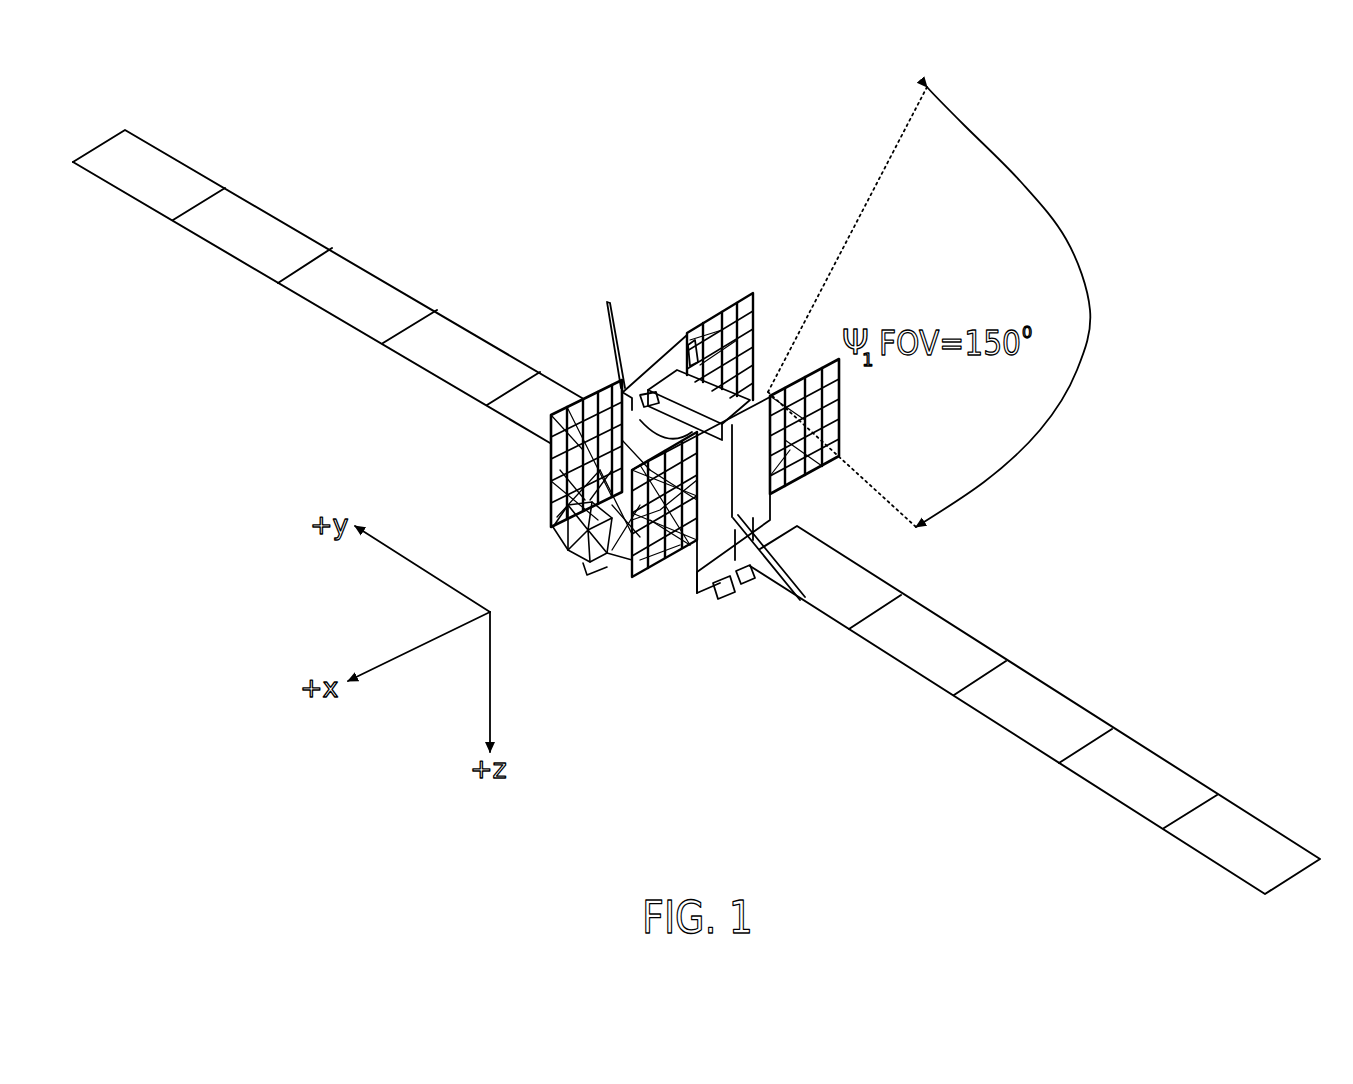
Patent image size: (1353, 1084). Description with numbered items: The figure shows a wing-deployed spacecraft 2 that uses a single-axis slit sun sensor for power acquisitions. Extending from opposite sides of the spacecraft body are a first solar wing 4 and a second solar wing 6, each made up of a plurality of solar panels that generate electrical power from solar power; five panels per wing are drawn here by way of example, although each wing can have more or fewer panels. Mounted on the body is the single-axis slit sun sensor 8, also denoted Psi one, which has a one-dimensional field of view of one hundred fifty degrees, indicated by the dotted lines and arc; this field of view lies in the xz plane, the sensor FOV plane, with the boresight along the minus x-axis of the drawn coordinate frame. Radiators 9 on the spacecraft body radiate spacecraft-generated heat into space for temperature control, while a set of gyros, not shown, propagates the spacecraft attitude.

The wing-deployed spacecraft 2 is at (645, 326).
The first solar wing 4 is at (947, 622).
The second solar wing 6 is at (370, 273).
The single-axis slit sun sensor 8 is at (764, 364).
The radiators 9 is at (549, 468).